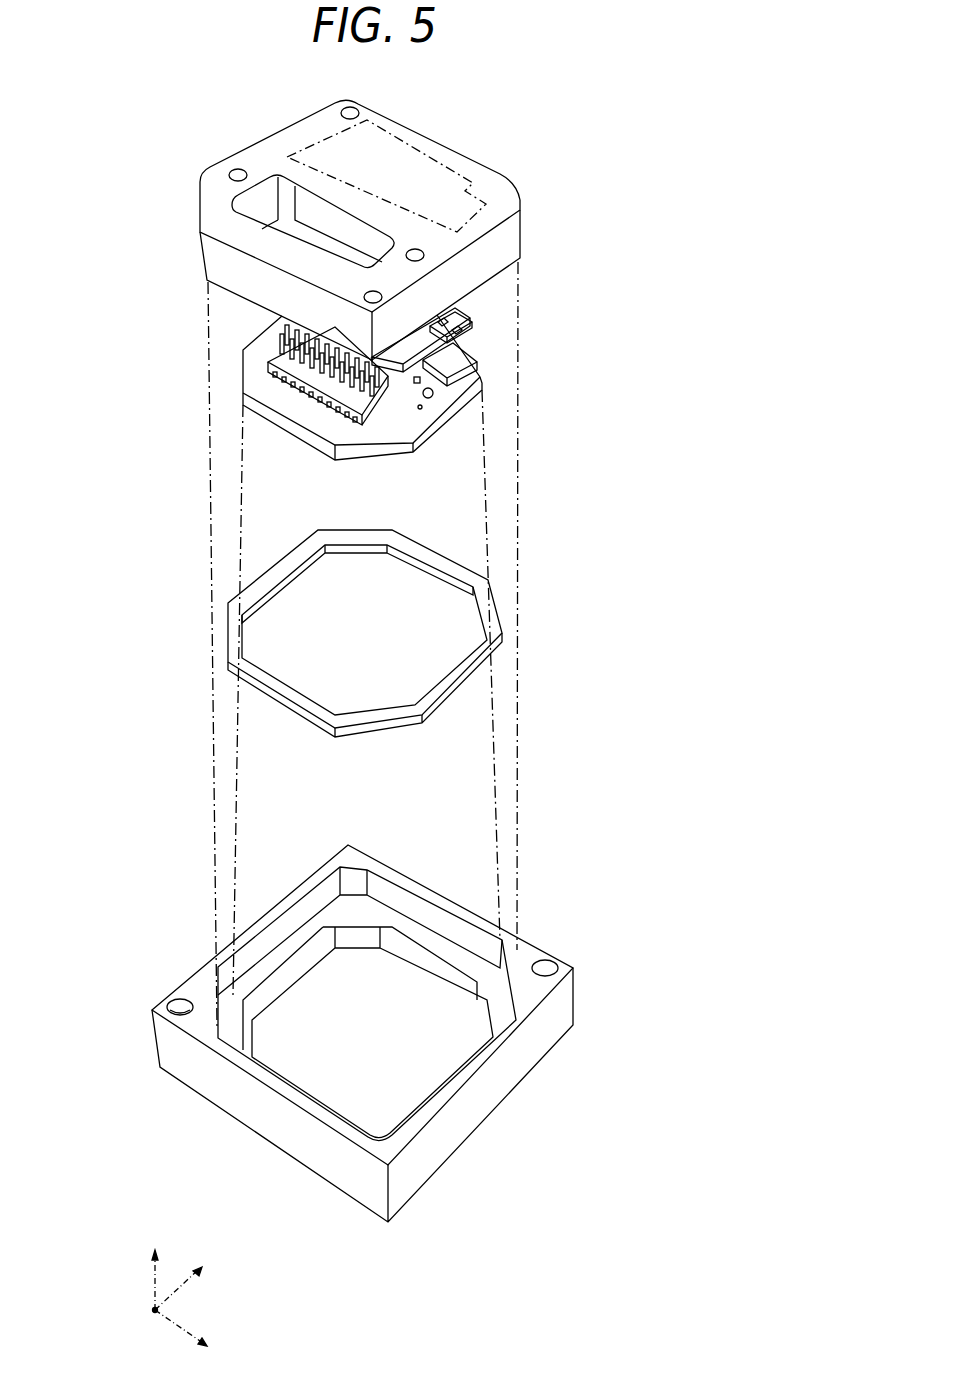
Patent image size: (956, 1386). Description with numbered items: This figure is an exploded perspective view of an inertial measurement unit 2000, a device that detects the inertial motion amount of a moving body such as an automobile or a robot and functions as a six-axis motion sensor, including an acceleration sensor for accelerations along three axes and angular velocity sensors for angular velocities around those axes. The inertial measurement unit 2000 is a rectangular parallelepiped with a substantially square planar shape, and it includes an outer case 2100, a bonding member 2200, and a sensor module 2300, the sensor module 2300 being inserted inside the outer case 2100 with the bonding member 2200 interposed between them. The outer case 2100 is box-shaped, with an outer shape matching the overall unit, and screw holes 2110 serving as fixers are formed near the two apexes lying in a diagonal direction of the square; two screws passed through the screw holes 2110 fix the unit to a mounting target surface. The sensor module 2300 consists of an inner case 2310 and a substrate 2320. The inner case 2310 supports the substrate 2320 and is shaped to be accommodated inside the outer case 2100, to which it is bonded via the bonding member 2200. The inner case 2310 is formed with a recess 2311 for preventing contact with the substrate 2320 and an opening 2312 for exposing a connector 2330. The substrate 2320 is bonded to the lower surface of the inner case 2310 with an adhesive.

The inertial measurement unit 2000 is at (642, 110).
The outer case 2100 is at (367, 1033).
The screw holes 2110 is at (168, 1003).
The bonding member 2200 is at (500, 637).
The sensor module 2300 is at (608, 167).
The inner case 2310 is at (505, 183).
The recess 2311 is at (427, 152).
The opening 2312 is at (337, 213).
The substrate 2320 is at (480, 380).
The connector 2330 is at (387, 390).